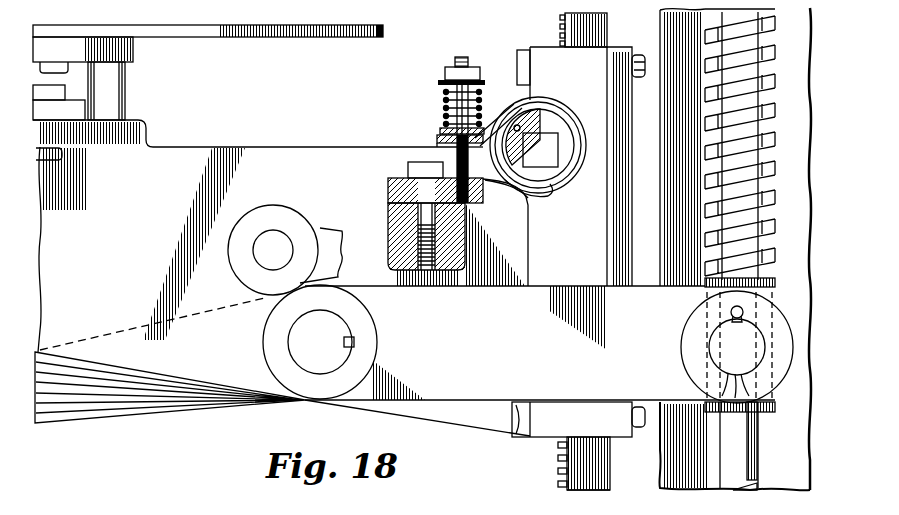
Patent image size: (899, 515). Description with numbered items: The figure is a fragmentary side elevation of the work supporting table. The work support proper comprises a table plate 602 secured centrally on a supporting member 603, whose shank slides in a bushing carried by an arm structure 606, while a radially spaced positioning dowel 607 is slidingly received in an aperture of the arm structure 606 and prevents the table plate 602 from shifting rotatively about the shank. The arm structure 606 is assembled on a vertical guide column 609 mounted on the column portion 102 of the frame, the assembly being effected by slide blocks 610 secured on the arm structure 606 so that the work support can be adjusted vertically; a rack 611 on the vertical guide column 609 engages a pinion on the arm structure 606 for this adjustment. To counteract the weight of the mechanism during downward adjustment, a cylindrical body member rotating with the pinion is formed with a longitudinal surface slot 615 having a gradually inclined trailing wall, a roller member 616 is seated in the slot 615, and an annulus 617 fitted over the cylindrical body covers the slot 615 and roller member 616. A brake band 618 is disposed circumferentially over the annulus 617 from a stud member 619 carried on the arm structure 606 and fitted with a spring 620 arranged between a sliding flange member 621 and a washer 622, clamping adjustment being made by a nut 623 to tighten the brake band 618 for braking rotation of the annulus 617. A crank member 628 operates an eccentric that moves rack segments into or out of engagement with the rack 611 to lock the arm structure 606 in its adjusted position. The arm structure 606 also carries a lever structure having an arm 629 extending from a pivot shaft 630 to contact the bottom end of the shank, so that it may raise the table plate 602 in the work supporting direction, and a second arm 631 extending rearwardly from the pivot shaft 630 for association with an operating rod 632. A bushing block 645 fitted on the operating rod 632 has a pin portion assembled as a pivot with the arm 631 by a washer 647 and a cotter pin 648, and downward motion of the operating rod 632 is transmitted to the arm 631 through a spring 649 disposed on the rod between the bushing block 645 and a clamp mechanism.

The table plate 602 is at (276, 39).
The supporting member 603 is at (132, 63).
The positioning dowel 607 is at (125, 96).
The arm structure 606 is at (311, 132).
The arm 629 is at (187, 406).
The second arm 631 is at (446, 393).
The pivot shaft 630 is at (317, 371).
The crank member 628 is at (328, 227).
The stud member 619 is at (460, 150).
The nut 623 is at (445, 70).
The washer 622 is at (445, 76).
The spring 620 is at (443, 106).
The sliding flange member 621 is at (445, 118).
The brake band 618 is at (530, 203).
The roller member 616 is at (514, 126).
The annulus 617 is at (549, 192).
The longitudinal surface slot 615 is at (532, 110).
The spring 649 is at (708, 200).
The bushing block 645 is at (768, 298).
The washer 647 is at (690, 318).
The cotter pin 648 is at (770, 402).
The column portion 102 is at (667, 476).
The operating rod 632 is at (757, 453).
The slide blocks 610 is at (613, 438).
The rack 611 is at (558, 466).
The vertical guide column 609 is at (581, 487).